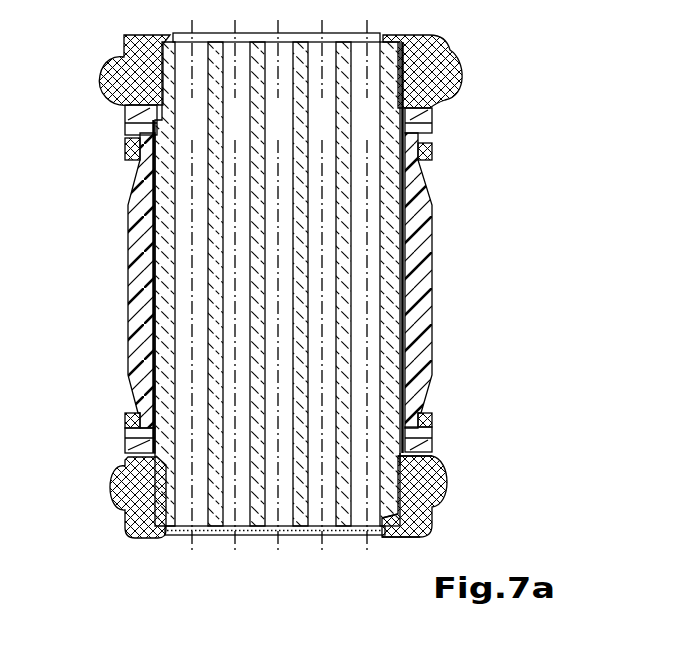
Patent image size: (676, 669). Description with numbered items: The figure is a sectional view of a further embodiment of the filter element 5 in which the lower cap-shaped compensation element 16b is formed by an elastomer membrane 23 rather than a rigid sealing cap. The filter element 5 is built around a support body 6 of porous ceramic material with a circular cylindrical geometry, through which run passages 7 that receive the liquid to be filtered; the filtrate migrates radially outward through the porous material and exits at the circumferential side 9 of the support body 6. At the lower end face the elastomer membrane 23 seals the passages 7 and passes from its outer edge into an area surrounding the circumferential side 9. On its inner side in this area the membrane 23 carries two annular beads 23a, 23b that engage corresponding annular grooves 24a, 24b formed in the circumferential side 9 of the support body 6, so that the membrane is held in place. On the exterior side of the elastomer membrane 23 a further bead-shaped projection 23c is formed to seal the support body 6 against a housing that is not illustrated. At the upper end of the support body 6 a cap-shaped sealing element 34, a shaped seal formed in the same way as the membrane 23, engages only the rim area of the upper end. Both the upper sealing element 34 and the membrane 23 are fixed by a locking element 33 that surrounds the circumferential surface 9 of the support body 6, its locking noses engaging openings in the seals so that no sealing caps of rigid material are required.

The filter element 5 is at (478, 175).
The support body 6 is at (168, 260).
The passages 7 is at (374, 133).
The circumferential side 9 is at (422, 242).
The lower cap-shaped compensation element 16b is at (116, 523).
The elastomer membrane 23 is at (216, 535).
The annular bead 23a is at (416, 468).
The annular bead 23b is at (416, 509).
The bead-shaped projection 23c is at (446, 490).
The annular groove 24a is at (386, 481).
The annular groove 24b is at (382, 512).
The locking element 33 is at (153, 305).
The cap-shaped sealing element 34 is at (100, 79).